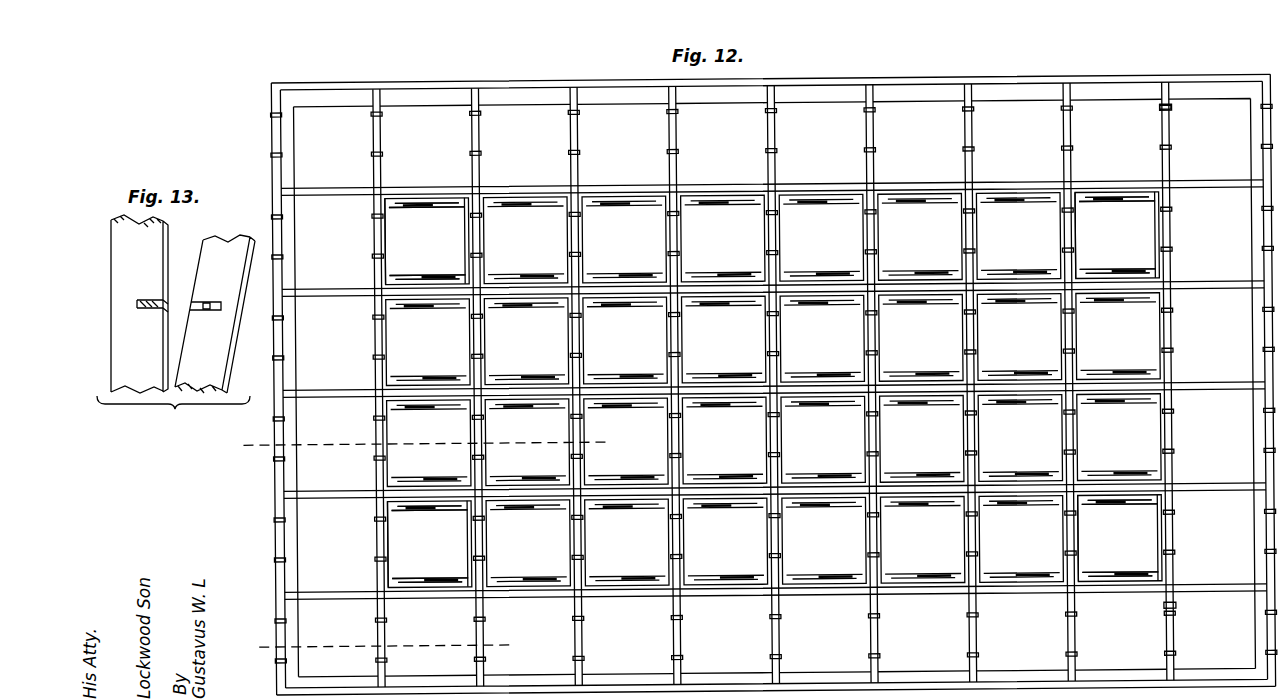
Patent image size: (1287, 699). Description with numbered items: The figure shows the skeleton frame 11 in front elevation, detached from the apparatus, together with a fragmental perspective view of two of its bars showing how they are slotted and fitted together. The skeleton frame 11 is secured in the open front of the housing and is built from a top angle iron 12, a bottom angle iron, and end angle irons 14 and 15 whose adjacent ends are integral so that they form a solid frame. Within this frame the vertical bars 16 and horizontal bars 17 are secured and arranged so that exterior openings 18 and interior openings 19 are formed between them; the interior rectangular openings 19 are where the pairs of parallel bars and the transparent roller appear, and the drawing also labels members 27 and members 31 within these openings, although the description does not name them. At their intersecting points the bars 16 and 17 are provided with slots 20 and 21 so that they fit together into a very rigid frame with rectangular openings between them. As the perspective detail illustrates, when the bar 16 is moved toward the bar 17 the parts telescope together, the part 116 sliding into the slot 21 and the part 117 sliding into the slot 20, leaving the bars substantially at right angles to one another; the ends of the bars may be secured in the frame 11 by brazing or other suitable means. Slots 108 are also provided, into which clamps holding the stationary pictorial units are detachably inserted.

In FIG. 12, the skeleton frame 11 is at (545, 68).
In FIG. 12, the top angle iron 12 is at (846, 87).
In FIG. 12, the end angle iron 14 is at (258, 663).
In FIG. 12, the end angle iron 15 is at (253, 465).
In FIG. 12, the vertical bar 16 is at (1064, 167).
In FIG. 13, the vertical bar 16 is at (111, 287).
In FIG. 12, the horizontal bar 17 is at (424, 189).
In FIG. 13, the horizontal bar 17 is at (233, 352).
In FIG. 12, the exterior opening 18 is at (775, 387).
In FIG. 12, the interior opening 19 is at (773, 390).
In FIG. 13, the slot 20 is at (143, 310).
In FIG. 13, the slot 21 is at (206, 302).
In FIG. 12, the vertical strip 27 is at (386, 238).
In FIG. 12, the horizontal strip 31 is at (441, 201).
In FIG. 12, the slot 108 is at (1170, 116).
In FIG. 13, the part of vertical bar 116 is at (128, 306).
In FIG. 13, the part of horizontal bar 117 is at (235, 306).